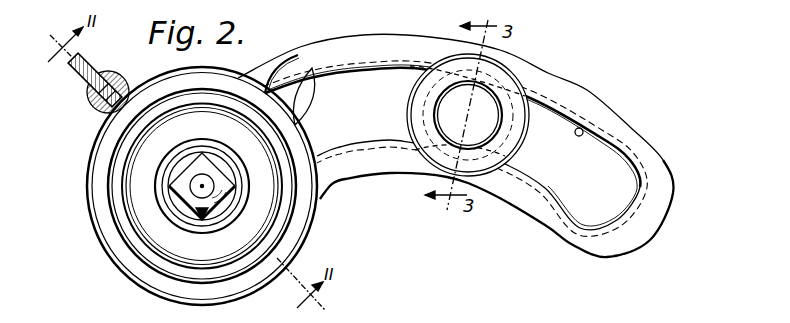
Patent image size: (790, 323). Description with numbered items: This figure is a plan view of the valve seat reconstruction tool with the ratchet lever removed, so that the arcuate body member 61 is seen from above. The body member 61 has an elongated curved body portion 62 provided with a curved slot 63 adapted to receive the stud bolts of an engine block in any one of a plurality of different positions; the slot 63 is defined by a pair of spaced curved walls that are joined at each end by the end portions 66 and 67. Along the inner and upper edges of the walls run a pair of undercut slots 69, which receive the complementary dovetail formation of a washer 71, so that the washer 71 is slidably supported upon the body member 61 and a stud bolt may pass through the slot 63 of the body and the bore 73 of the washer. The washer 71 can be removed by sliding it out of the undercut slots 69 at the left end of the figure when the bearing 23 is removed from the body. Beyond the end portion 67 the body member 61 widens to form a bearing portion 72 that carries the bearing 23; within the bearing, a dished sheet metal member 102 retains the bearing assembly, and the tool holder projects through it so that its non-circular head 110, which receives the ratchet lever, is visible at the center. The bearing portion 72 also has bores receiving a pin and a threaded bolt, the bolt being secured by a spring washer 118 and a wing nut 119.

The bearing 23 is at (123, 257).
The dished sheet metal member 102 is at (127, 188).
The non-circular end or head 110 is at (175, 202).
The bearing portion 72 is at (250, 71).
The body portion 62 is at (550, 80).
The end portion 66 is at (653, 210).
The body member 61 is at (368, 66).
The curved slot 63 is at (582, 128).
The undercut slots 69 is at (645, 156).
The end portion 67 is at (313, 82).
The washer 71 is at (507, 138).
The bore 73 is at (434, 100).
The spring washer 118 is at (103, 108).
The wing nut 119 is at (85, 72).